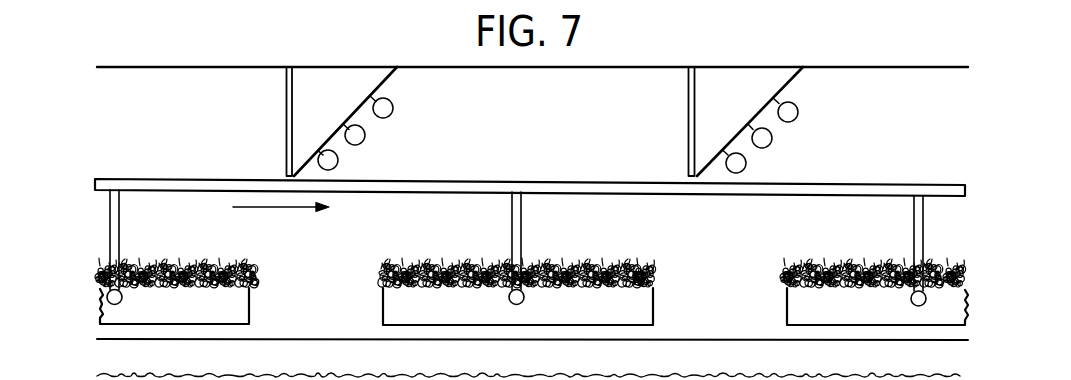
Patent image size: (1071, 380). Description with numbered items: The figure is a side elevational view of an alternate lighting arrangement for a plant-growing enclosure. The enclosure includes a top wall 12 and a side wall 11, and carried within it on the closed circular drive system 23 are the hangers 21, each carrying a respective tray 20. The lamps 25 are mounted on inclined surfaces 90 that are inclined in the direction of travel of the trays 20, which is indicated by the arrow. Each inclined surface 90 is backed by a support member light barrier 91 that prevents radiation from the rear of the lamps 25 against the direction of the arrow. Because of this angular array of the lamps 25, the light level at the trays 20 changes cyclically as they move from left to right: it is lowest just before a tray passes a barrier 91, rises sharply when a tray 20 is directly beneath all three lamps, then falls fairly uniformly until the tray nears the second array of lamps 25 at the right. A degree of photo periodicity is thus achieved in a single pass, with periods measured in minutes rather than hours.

The side wall 11 is at (652, 124).
The top wall 12 is at (428, 66).
The tray 20 is at (398, 305).
The hangers 21 is at (120, 231).
The closed circular drive system 23 is at (433, 187).
The lamps 25 is at (338, 160).
The inclined surfaces 90 is at (358, 104).
The support member light barrier 91 is at (286, 114).